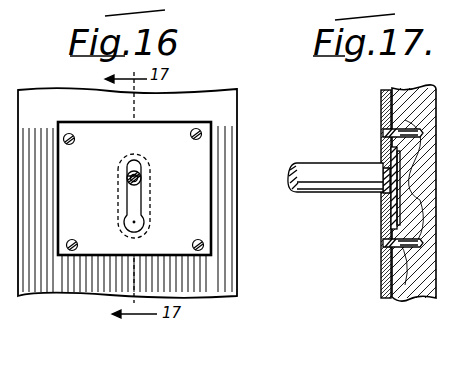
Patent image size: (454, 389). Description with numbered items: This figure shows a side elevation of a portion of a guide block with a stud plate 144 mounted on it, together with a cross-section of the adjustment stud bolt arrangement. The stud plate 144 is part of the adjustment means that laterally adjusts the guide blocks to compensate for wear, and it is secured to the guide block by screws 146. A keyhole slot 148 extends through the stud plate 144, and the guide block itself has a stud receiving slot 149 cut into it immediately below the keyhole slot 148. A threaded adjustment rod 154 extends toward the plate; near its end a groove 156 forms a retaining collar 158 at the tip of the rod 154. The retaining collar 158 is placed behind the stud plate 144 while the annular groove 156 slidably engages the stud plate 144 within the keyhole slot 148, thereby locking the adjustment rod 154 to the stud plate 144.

In FIG. 16, the stud plate 144 is at (190, 213).
In FIG. 16, the screws 146 is at (200, 133).
In FIG. 17, the screws 146 is at (386, 194).
In FIG. 16, the keyhole slot 148 is at (141, 204).
In FIG. 17, the keyhole slot 148 is at (395, 188).
In FIG. 17, the stud receiving slot 149 is at (392, 205).
In FIG. 16, the adjustment rod 154 is at (127, 182).
In FIG. 17, the adjustment rod 154 is at (307, 167).
In FIG. 17, the groove 156 is at (385, 140).
In FIG. 16, the retaining collar 158 is at (133, 170).
In FIG. 17, the retaining collar 158 is at (378, 182).